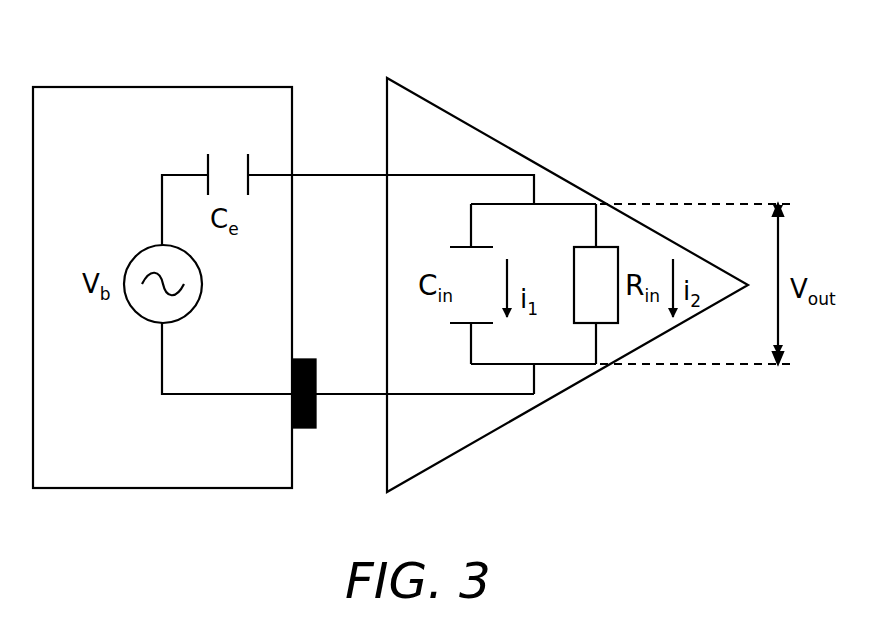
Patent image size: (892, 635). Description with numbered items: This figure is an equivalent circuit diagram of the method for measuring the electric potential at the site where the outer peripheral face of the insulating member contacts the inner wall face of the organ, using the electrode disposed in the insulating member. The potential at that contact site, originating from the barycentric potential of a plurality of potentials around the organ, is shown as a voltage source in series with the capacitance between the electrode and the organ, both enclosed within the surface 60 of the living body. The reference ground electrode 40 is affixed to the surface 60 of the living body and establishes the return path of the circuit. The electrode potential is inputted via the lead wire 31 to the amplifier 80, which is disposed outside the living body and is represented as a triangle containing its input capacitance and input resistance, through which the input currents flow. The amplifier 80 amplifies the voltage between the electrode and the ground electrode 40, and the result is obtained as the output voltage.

The surface of a living body 60 is at (133, 87).
The lead wire 31 is at (334, 175).
The reference ground electrode 40 is at (307, 428).
The amplifier 80 is at (527, 160).